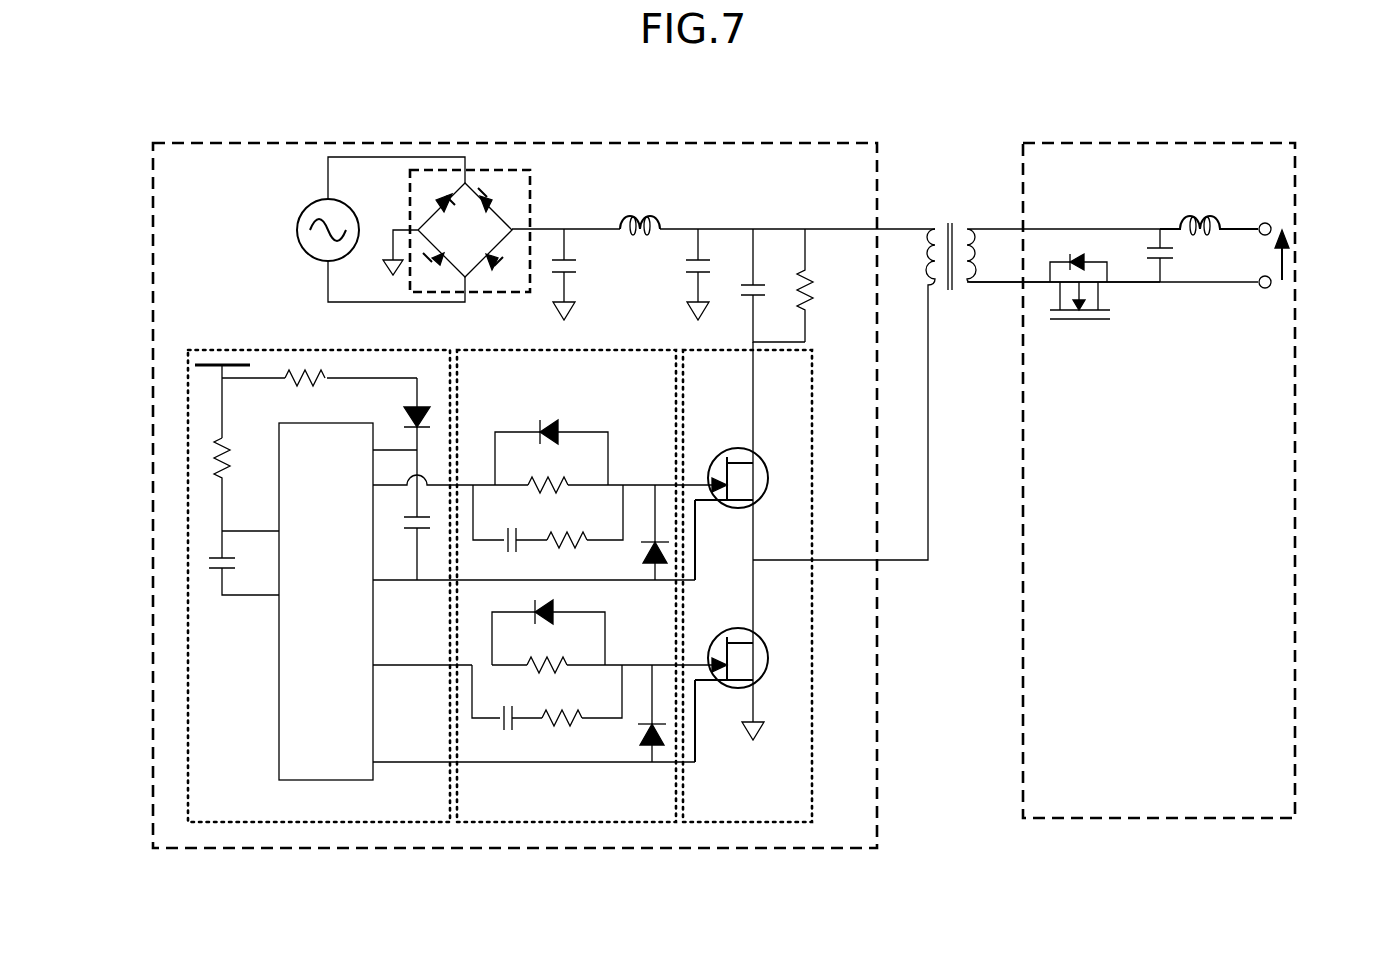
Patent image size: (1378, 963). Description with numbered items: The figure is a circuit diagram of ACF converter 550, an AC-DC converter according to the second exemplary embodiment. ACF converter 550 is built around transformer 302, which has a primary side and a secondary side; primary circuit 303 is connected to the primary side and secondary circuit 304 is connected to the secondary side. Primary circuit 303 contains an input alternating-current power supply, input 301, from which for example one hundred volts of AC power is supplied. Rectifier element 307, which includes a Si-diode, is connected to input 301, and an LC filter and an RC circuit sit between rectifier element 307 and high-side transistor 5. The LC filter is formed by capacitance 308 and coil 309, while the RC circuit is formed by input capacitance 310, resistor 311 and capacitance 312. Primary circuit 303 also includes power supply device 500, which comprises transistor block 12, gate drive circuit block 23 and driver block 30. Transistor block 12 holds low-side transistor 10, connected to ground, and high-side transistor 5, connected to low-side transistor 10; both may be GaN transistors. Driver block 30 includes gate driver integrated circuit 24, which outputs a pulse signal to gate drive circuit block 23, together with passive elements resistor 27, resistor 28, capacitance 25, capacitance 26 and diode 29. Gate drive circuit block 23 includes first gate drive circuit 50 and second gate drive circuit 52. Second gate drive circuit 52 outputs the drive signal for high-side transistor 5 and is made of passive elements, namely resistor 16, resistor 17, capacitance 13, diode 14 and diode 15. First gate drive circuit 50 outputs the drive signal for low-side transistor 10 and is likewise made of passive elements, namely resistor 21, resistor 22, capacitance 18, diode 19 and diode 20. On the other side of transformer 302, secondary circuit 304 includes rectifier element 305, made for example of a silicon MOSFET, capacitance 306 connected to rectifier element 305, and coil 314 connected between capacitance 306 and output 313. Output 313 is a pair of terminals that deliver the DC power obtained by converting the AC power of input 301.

The ACF converter 550 is at (82, 121).
The power supply device 500 is at (293, 883).
The primary circuit 303 is at (832, 848).
The secondary circuit 304 is at (1175, 822).
The input 301 is at (297, 230).
The rectifier element 307 is at (497, 170).
The capacitance 308 is at (570, 278).
The coil 309 is at (643, 212).
The input capacitance 310 is at (690, 283).
The resistor 311 is at (808, 280).
The capacitance 312 is at (749, 302).
The transformer 302 is at (952, 215).
The rectifier element 305 is at (1083, 322).
The capacitance 306 is at (1172, 258).
The coil 314 is at (1200, 221).
The output 313 is at (1298, 262).
The driver block 30 is at (317, 822).
The gate driver integrated circuit 24 is at (279, 690).
The capacitance 25 is at (222, 559).
The capacitance 26 is at (417, 530).
The resistor 27 is at (228, 464).
The resistor 28 is at (309, 386).
The diode 29 is at (404, 410).
The gate drive circuit block 23 is at (567, 822).
The second gate drive circuit 52 is at (517, 404).
The first gate drive circuit 50 is at (562, 770).
The capacitance 13 is at (501, 548).
The diode 14 is at (640, 558).
The diode 15 is at (547, 420).
The resistor 16 is at (548, 538).
The resistor 17 is at (566, 490).
The capacitance 18 is at (501, 730).
The diode 19 is at (638, 737).
The diode 20 is at (556, 607).
The resistor 21 is at (545, 716).
The resistor 22 is at (562, 670).
The transistor block 12 is at (742, 822).
The high-side transistor 5 is at (768, 480).
The low-side transistor 10 is at (768, 662).